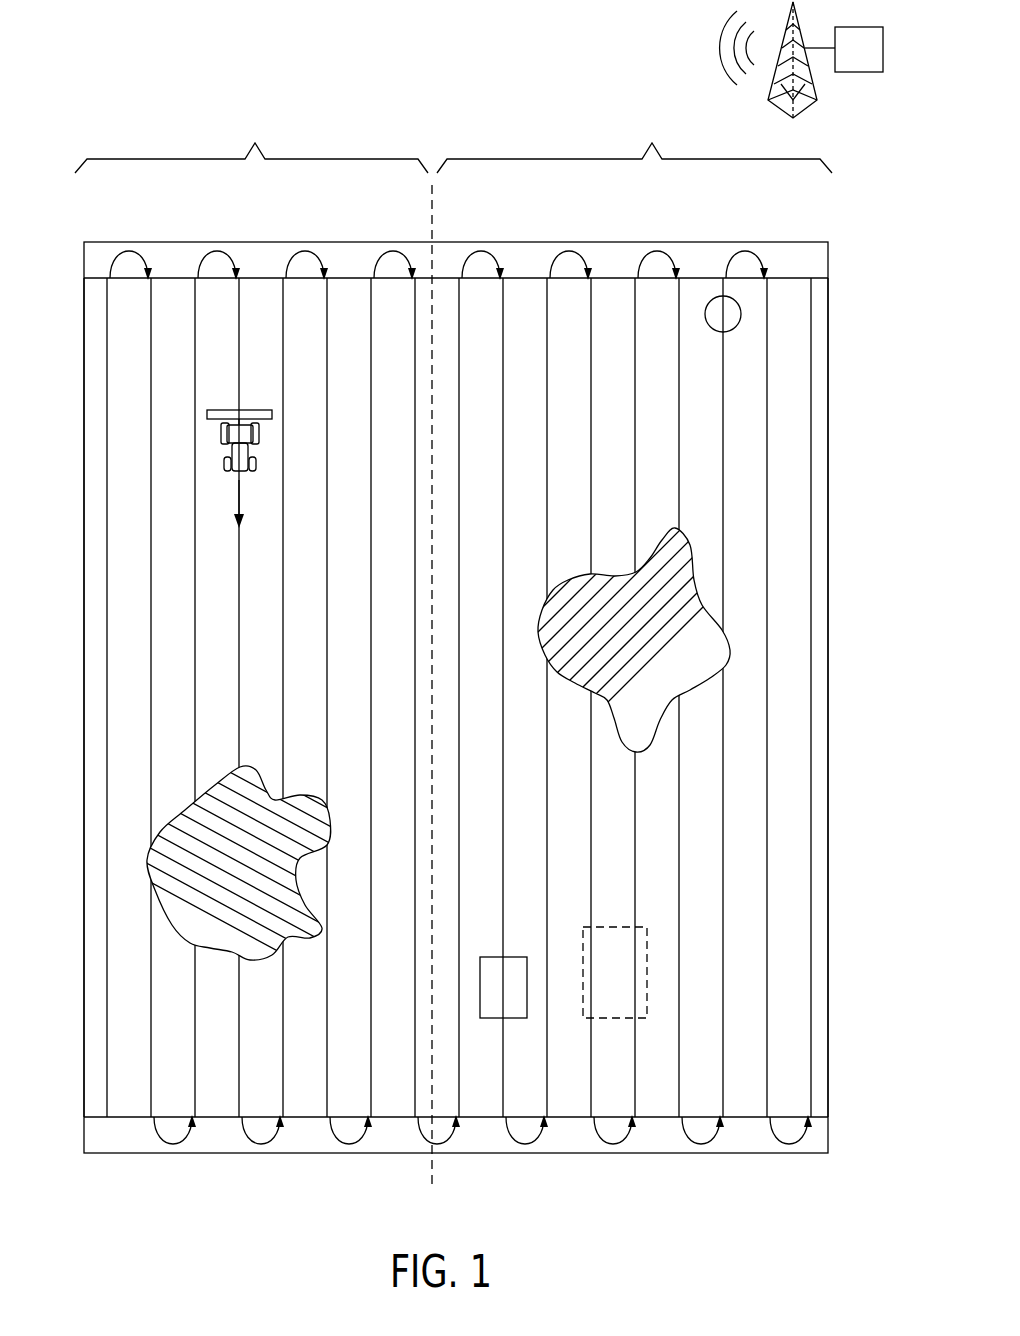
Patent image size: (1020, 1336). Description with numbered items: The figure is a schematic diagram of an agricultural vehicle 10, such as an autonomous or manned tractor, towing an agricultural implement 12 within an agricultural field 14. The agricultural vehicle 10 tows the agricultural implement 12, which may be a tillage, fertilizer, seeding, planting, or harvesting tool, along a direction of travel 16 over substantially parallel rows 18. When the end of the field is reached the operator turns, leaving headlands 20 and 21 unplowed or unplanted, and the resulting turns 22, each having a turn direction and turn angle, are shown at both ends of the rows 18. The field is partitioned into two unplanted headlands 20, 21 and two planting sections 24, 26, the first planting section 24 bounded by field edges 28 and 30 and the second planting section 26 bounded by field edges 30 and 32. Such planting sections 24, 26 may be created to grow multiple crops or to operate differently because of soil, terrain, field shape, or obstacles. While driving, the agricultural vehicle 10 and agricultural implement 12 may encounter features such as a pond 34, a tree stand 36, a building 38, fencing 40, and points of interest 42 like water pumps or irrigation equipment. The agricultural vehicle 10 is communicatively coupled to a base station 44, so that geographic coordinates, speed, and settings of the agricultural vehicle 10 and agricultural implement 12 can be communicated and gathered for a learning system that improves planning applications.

The agricultural vehicle 10 is at (232, 446).
The agricultural implement 12 is at (245, 410).
The agricultural field 14 is at (790, 452).
The direction of travel 16 is at (236, 500).
The rows 18 is at (151, 604).
The headland 20 is at (835, 233).
The headland 21 is at (835, 1113).
The turns 22 is at (142, 256).
The planting section 24 is at (251, 142).
The planting section 26 is at (634, 142).
The field edge 28 is at (84, 745).
The field edge 30 is at (434, 1168).
The field edge 32 is at (828, 950).
The pond 34 is at (255, 767).
The tree stand 36 is at (538, 652).
The building 38 is at (512, 1019).
The fencing 40 is at (597, 1019).
The point of interest 42 is at (738, 327).
The base station 44 is at (875, 64).